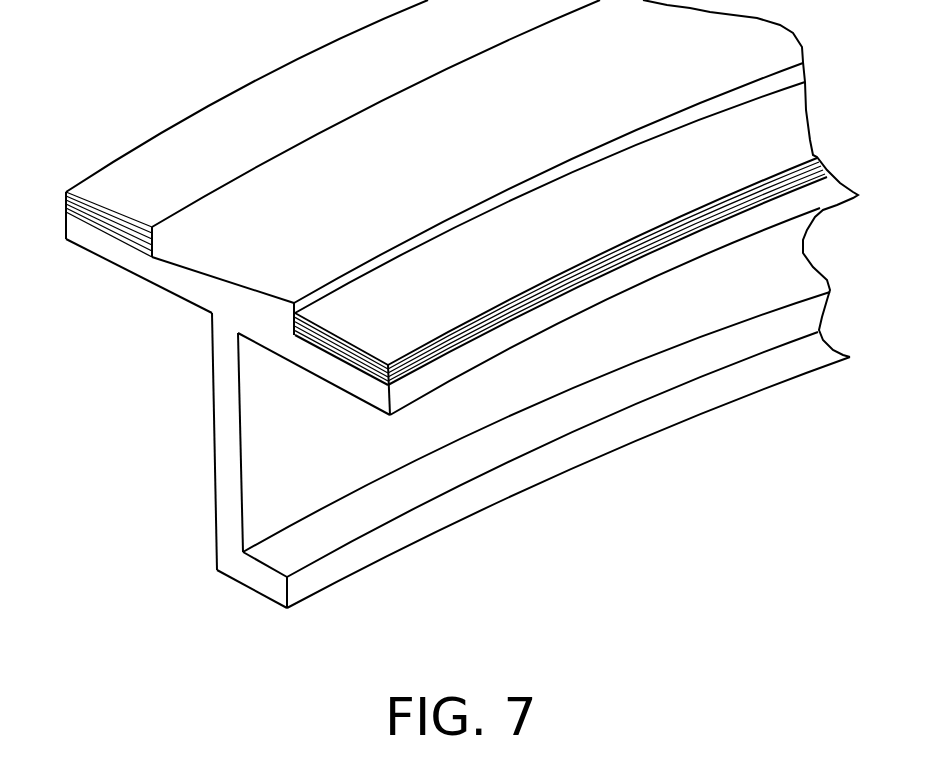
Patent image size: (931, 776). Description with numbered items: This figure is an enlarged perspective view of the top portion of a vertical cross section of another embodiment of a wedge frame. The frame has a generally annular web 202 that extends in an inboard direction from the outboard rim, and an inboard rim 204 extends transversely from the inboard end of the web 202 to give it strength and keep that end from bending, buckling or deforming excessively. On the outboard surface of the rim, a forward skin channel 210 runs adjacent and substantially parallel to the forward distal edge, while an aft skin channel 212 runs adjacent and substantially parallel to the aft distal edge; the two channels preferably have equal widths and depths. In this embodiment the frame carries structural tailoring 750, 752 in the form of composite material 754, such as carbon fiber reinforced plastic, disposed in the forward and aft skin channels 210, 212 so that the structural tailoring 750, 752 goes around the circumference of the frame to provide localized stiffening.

The web 202 is at (282, 433).
The inboard rim 204 is at (260, 580).
The forward skin channel 210 is at (150, 226).
The aft skin channel 212 is at (300, 310).
The structural tailoring 750 is at (315, 80).
The structural tailoring 752 is at (490, 257).
The composite material 754 is at (138, 243).